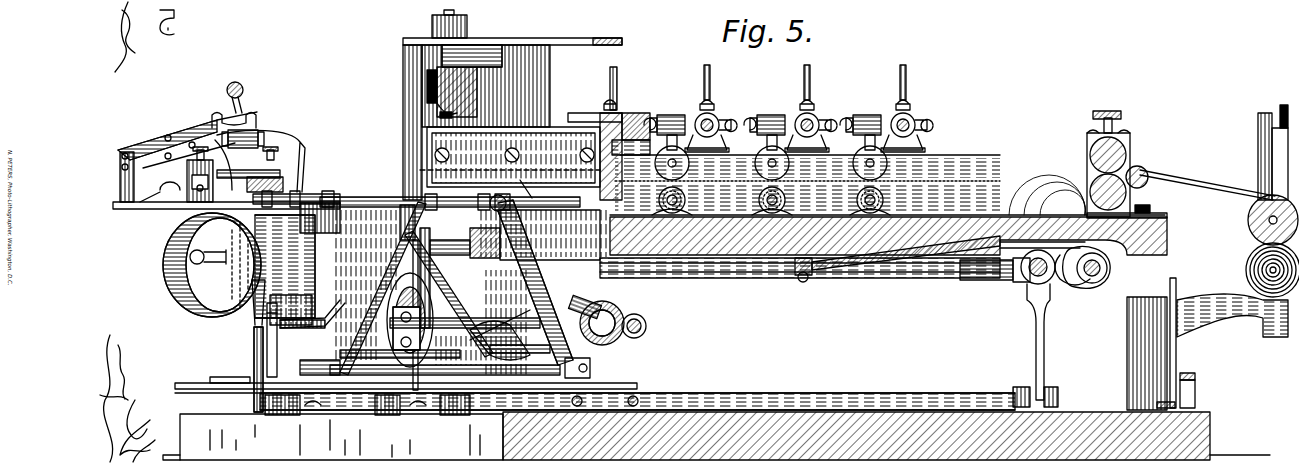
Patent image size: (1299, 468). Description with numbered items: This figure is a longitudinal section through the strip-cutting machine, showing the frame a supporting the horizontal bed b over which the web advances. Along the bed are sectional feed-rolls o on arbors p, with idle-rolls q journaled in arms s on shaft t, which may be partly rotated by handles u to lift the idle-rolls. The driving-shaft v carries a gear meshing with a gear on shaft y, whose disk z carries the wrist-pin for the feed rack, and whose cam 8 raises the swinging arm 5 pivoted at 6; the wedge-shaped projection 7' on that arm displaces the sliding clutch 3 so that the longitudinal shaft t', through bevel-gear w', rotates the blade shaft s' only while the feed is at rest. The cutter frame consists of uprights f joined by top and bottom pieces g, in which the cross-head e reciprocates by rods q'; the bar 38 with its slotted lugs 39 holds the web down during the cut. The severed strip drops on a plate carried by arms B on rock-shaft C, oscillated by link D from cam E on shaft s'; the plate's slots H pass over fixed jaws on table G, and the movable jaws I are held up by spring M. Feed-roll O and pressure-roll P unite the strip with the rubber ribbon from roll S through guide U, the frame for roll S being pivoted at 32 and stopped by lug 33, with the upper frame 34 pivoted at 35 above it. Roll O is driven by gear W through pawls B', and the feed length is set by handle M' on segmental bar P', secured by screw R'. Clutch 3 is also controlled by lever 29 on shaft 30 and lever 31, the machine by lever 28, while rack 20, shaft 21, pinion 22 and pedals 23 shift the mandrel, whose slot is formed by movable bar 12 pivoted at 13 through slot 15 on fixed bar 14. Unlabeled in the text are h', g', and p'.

The pivot 35 is at (124, 153).
The pivot 32 is at (123, 167).
The frame 34 is at (190, 142).
The lug 33 is at (186, 182).
The screw R' is at (240, 105).
The loose roll S is at (260, 140).
The segmental bar P' is at (266, 157).
The pressure-roll P is at (296, 187).
The guide U is at (238, 169).
The table G is at (142, 209).
The feed-roll O is at (164, 253).
The handle or lever M' is at (174, 262).
The gear W is at (297, 260).
The lever 31 is at (256, 342).
The slots H is at (307, 322).
The plate g' is at (406, 391).
The arms or pedals 23 is at (335, 400).
The lever 28 is at (450, 370).
The rock-shaft C is at (500, 372).
The spring M is at (509, 374).
The pinion 22 is at (583, 412).
The shaft 21 is at (640, 395).
The shaft 30 is at (872, 390).
The column h' is at (460, 22).
The top and bottom pieces g is at (520, 197).
The uprights f is at (427, 73).
The cross-head e is at (420, 112).
The ears or lugs 39 is at (450, 117).
The rods q' is at (489, 157).
The movable jaws I is at (403, 200).
The frame a is at (574, 148).
The arms B is at (536, 248).
The shaft t is at (724, 146).
The bar 38 is at (631, 146).
The handles u is at (610, 85).
The pawls B' is at (445, 288).
The shaft y is at (420, 312).
The disk z is at (449, 294).
The bevel-gear w' is at (465, 253).
The rod p' is at (463, 278).
The bed or table b is at (554, 240).
The link or yoke D is at (602, 310).
The cam E is at (628, 314).
The horizontal shaft s' is at (658, 320).
The arbors p is at (888, 236).
The shaft t' is at (800, 278).
The pivot 6 is at (815, 270).
The swinging arm 5 is at (930, 256).
The arms s is at (762, 114).
The idle-rolls q is at (762, 157).
The feed-rolls o is at (686, 200).
The wedge-shaped projection 7' is at (995, 282).
The sliding clutch 3 is at (1025, 279).
The driving-shaft v is at (1045, 274).
The cam 8 is at (1086, 286).
The lever 29 is at (1040, 351).
The rack 20 is at (1186, 385).
The movable bar 12 is at (1272, 172).
The fixed vertical bar 14 is at (1262, 148).
The vertical slot 15 is at (1281, 118).
The pivot 13 is at (1284, 108).